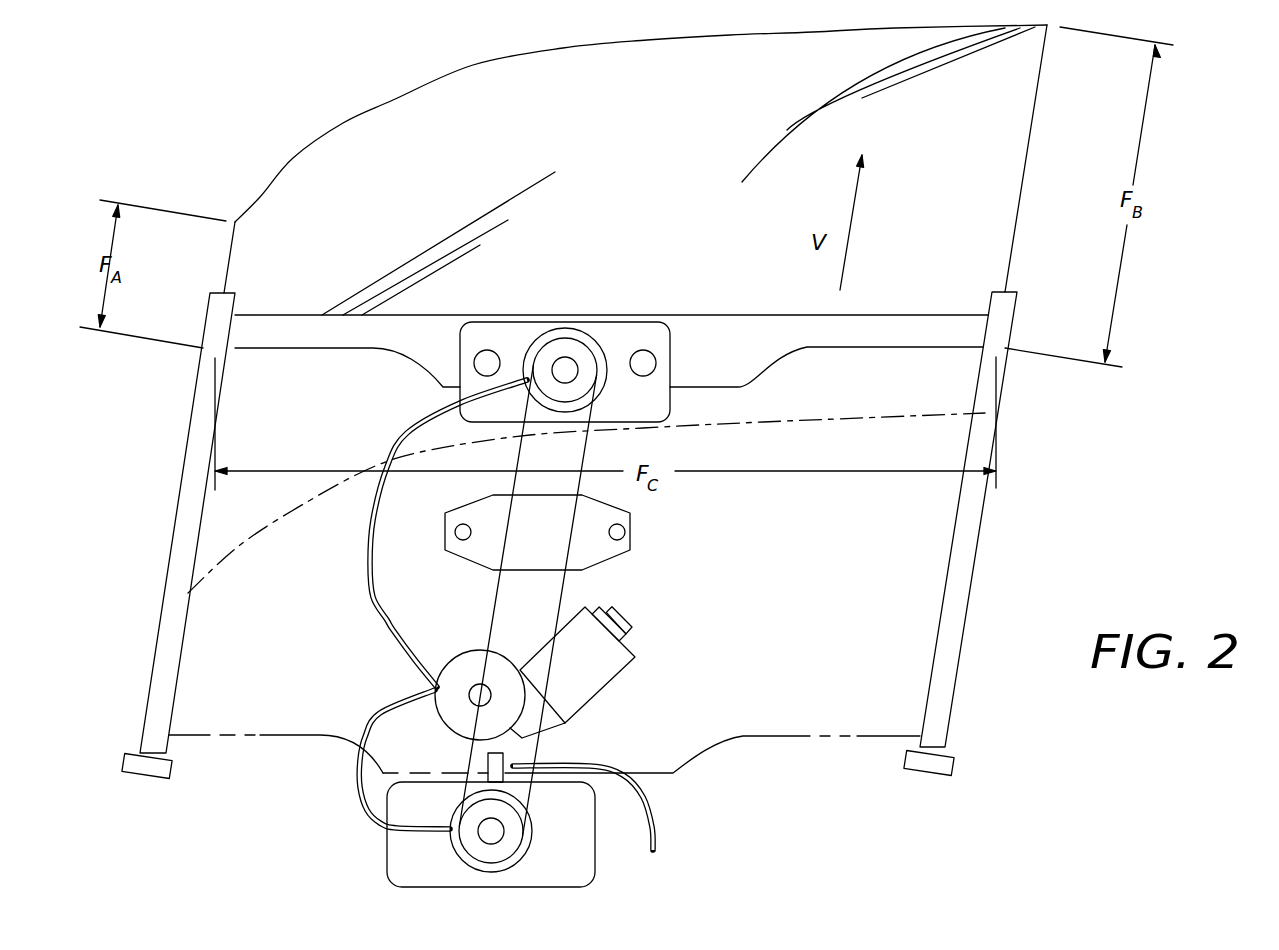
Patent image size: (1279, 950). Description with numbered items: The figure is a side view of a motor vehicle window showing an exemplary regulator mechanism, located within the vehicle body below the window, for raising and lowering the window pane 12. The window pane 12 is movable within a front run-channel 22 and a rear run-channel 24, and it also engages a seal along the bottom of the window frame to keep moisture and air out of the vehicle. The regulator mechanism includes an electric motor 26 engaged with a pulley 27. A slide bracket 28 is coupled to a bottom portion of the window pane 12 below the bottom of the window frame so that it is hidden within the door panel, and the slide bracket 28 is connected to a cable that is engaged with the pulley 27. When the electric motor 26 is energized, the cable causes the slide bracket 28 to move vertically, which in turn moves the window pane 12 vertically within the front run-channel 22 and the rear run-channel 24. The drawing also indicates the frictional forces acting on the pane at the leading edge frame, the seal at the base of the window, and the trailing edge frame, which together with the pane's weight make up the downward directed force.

The window pane 12 is at (360, 153).
The front run-channel 22 is at (167, 635).
The rear run-channel 24 is at (973, 570).
The electric motor 26 is at (595, 675).
The pulley 27 is at (475, 667).
The slide bracket 28 is at (635, 398).